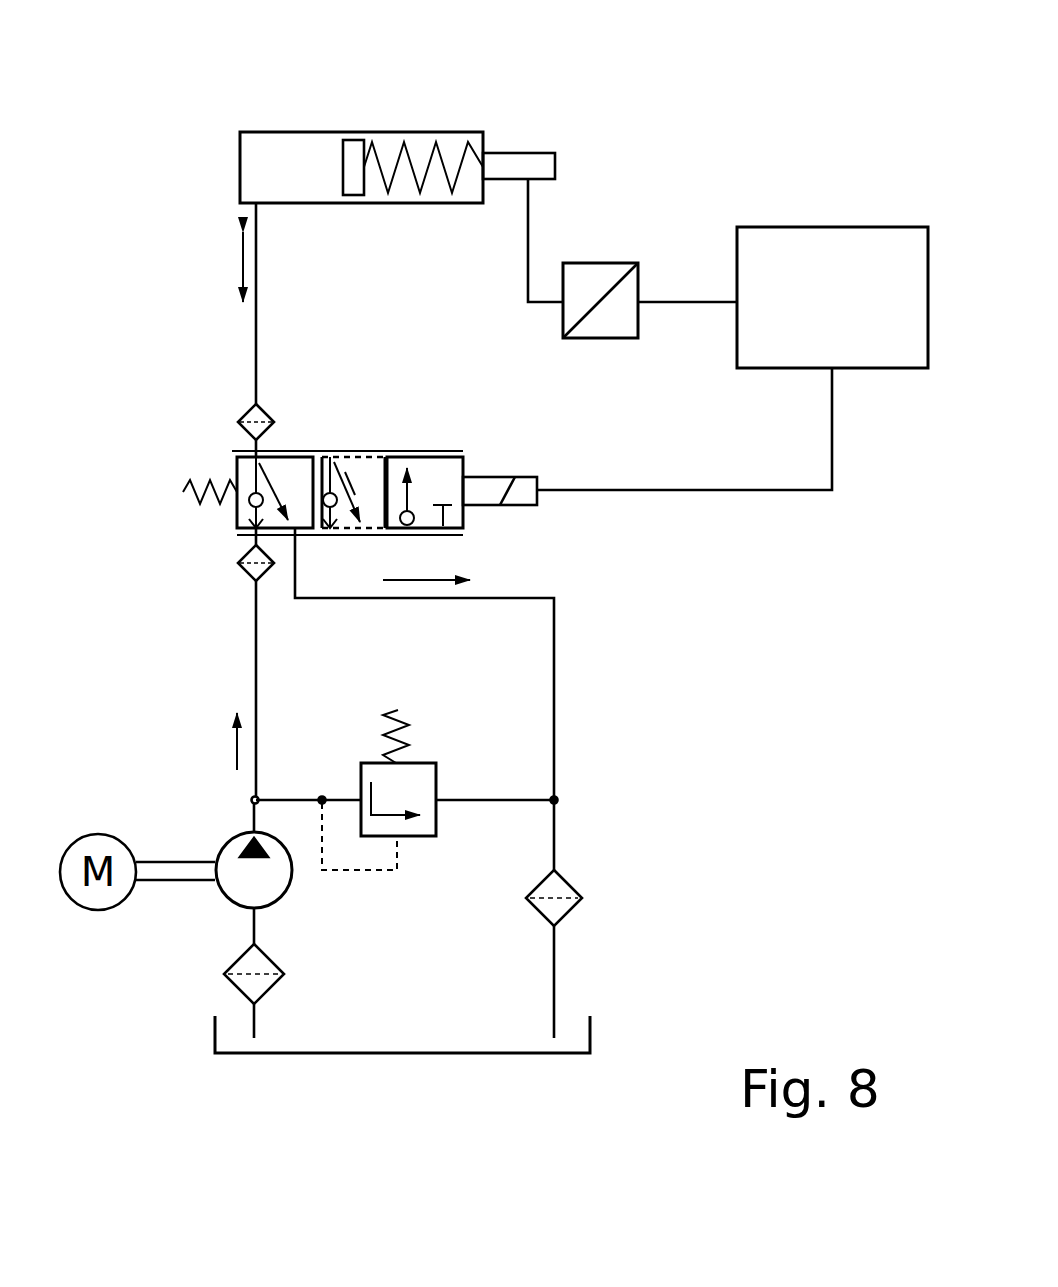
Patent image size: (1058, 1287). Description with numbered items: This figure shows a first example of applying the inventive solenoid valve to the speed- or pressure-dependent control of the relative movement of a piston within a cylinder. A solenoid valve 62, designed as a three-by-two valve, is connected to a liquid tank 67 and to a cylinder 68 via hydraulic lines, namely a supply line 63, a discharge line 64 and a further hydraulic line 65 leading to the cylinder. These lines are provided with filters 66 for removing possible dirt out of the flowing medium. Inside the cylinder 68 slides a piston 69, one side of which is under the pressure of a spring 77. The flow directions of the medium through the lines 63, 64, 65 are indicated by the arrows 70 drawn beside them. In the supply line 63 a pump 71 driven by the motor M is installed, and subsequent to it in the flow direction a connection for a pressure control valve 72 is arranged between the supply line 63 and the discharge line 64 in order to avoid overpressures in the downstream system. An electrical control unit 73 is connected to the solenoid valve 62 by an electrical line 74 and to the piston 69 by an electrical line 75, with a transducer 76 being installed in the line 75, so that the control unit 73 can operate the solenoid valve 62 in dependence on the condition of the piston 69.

The solenoid valve 62 is at (376, 450).
The supply line 63 is at (252, 658).
The discharge line 64 is at (418, 602).
The hydraulic line 65 is at (254, 336).
The filter 66 is at (276, 419).
The liquid tank 67 is at (412, 1058).
The cylinder 68 is at (308, 130).
The piston 69 is at (353, 150).
The arrows 70 is at (240, 265).
The pump 71 is at (238, 836).
The pressure control valve 72 is at (440, 762).
The electrical control unit 73 is at (832, 297).
The electrical line 74 is at (598, 488).
The electrical line 75 is at (542, 306).
The transducer 76 is at (642, 262).
The spring 77 is at (437, 136).